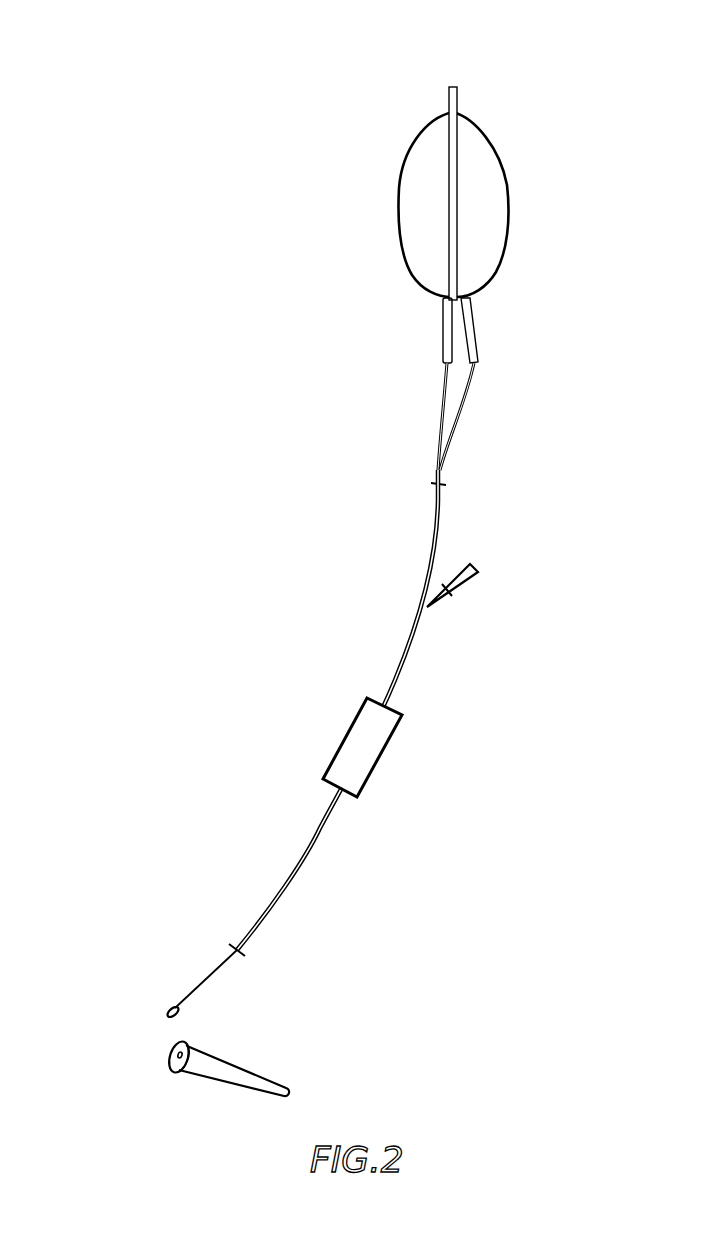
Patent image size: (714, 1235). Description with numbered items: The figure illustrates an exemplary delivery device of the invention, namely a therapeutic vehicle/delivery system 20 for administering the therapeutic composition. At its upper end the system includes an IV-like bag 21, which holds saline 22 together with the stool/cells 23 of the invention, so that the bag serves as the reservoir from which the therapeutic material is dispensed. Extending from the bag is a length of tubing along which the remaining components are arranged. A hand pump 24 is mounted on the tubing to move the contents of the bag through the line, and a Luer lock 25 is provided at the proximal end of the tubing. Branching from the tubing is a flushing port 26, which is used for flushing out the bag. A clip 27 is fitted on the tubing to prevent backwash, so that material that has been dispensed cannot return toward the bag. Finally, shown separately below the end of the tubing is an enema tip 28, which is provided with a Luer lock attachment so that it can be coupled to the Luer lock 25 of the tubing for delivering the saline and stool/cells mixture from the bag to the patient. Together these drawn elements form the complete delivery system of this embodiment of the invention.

The therapeutic vehicle/delivery system 20 is at (524, 98).
The IV-like bag 21 is at (450, 112).
The saline 22 is at (509, 215).
The stool/cells 23 is at (400, 195).
The hand pump 24 is at (393, 737).
The Luer lock 25 is at (168, 1008).
The flushing port 26 is at (483, 570).
The clip 27 is at (247, 951).
The enema tip 28 is at (290, 1090).